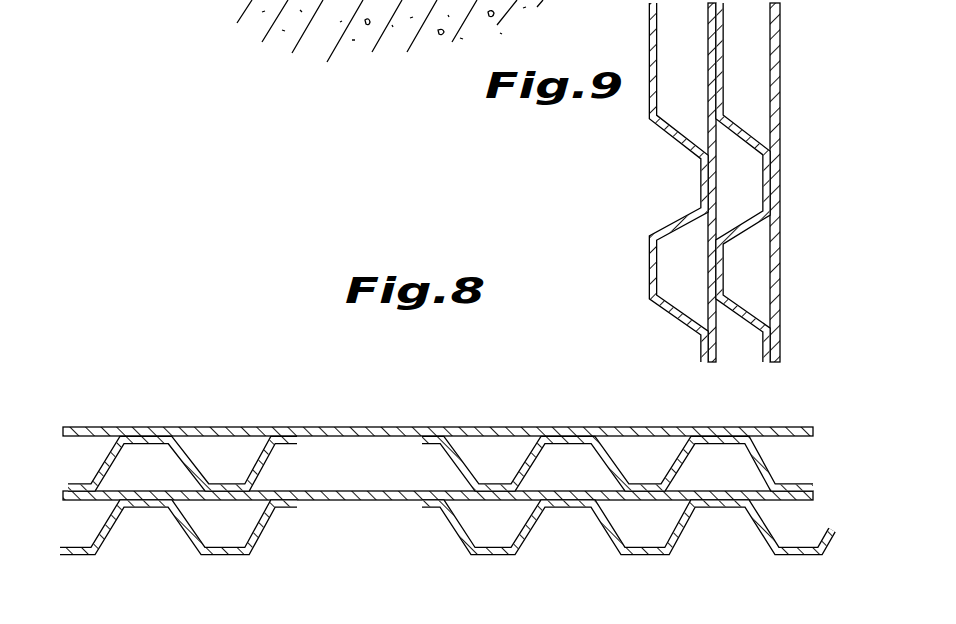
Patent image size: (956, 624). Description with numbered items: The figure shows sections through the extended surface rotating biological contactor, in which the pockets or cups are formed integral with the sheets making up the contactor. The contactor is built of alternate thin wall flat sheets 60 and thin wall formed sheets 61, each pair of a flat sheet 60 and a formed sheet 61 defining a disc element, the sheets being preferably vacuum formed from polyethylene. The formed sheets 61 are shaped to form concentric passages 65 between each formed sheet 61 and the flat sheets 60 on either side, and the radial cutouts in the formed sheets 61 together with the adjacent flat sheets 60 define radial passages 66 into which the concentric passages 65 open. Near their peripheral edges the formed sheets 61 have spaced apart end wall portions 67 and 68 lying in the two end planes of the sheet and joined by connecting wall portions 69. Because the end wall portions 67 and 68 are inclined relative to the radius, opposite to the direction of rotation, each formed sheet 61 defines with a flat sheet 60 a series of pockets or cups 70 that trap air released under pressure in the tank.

In FIG. 9, the flat sheet 60 is at (698, 0).
In FIG. 8, the flat sheet 60 is at (408, 423).
In FIG. 9, the formed sheet 61 is at (686, 329).
In FIG. 8, the formed sheet 61 is at (775, 467).
In FIG. 9, the concentric passage 65 is at (753, 255).
In FIG. 8, the radial passage 66 is at (327, 445).
In FIG. 8, the end wall portion 67 is at (502, 555).
In FIG. 8, the end wall portion 68 is at (573, 510).
In FIG. 8, the connecting wall portion 69 is at (528, 522).
In FIG. 8, the pocket or cup 70 is at (233, 448).